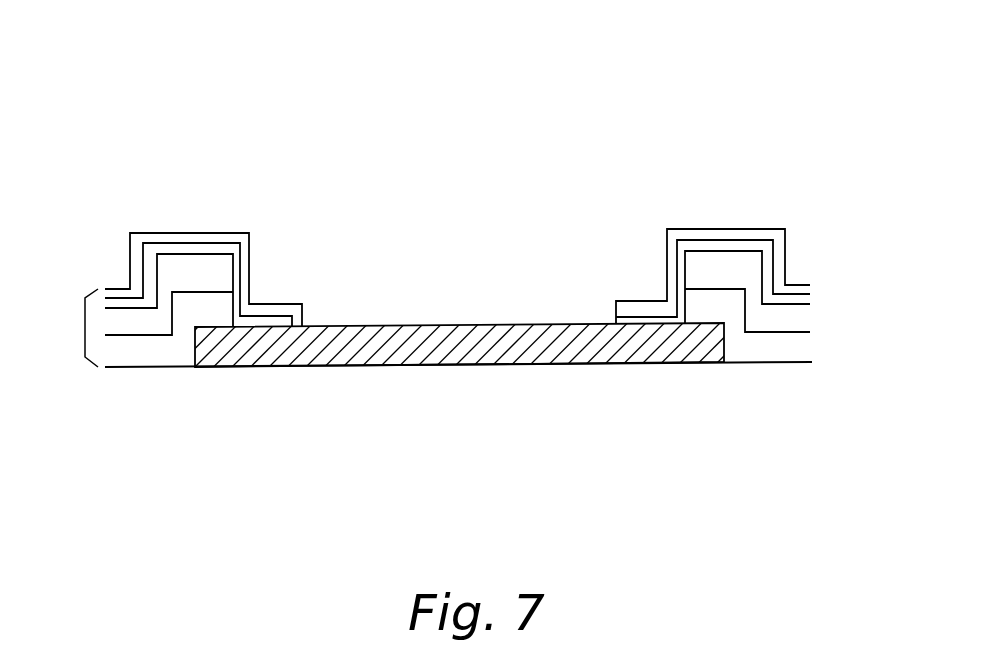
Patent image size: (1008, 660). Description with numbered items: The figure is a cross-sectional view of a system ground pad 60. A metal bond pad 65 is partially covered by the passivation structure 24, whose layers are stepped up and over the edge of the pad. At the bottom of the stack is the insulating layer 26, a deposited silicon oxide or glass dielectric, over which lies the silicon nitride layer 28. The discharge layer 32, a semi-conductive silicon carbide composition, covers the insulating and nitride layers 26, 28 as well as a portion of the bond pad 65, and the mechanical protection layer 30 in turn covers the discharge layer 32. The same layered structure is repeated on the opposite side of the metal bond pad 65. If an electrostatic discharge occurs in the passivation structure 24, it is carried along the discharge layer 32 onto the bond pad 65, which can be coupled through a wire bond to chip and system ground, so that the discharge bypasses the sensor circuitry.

The passivation structure 24 is at (85, 327).
The insulating layer 26 is at (144, 352).
The silicon nitride layer 28 is at (128, 322).
The mechanical protection layer 30 is at (113, 293).
The discharge layer 32 is at (123, 305).
The system ground pad 60 is at (505, 105).
The metal bond pad 65 is at (582, 350).